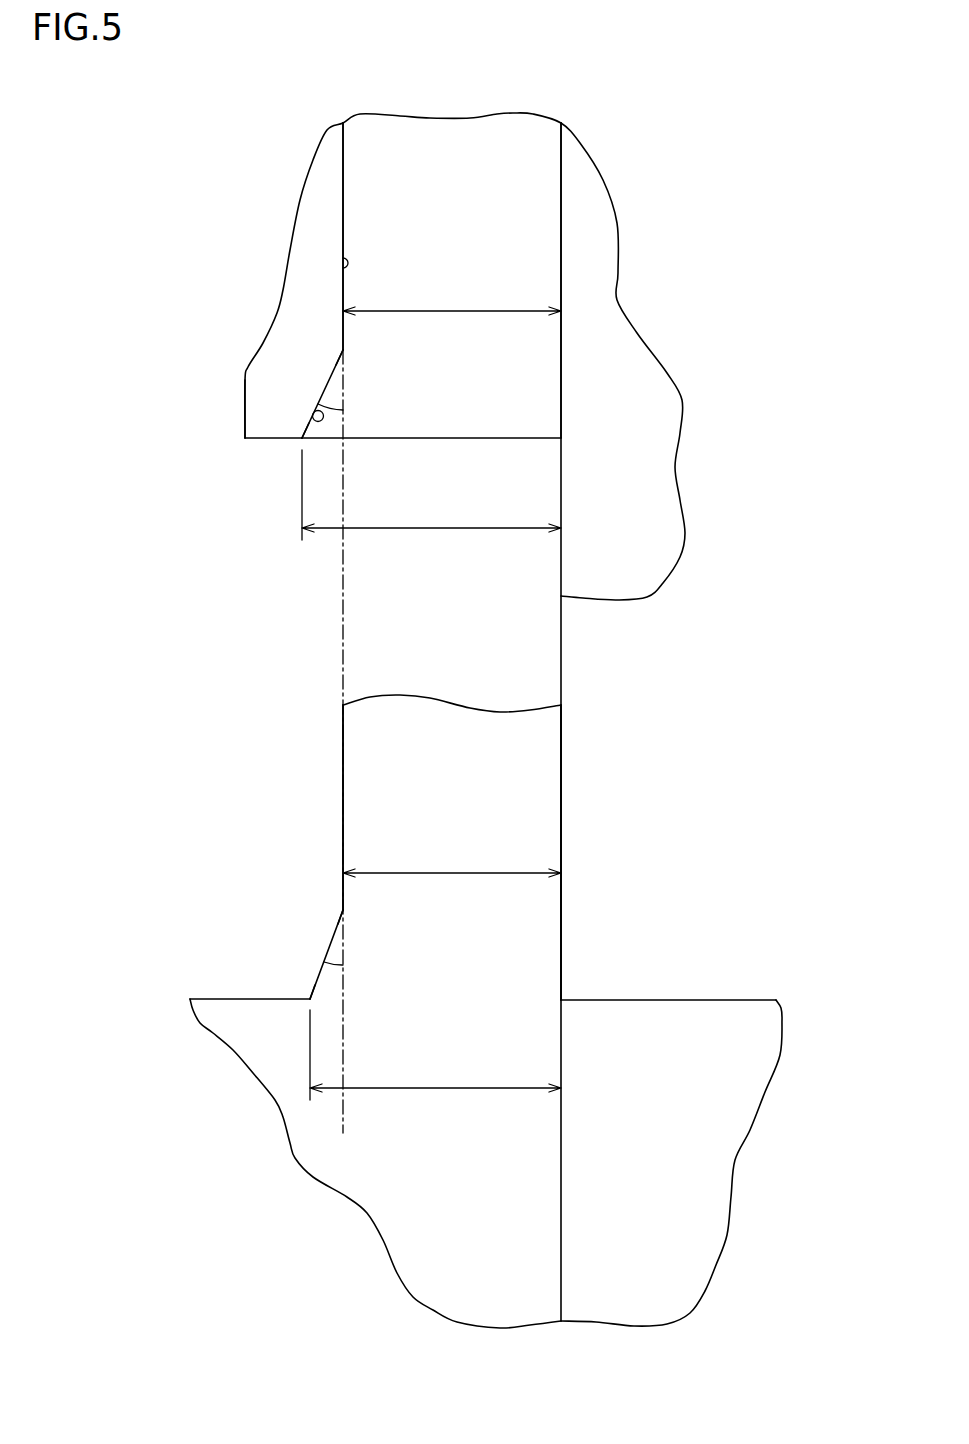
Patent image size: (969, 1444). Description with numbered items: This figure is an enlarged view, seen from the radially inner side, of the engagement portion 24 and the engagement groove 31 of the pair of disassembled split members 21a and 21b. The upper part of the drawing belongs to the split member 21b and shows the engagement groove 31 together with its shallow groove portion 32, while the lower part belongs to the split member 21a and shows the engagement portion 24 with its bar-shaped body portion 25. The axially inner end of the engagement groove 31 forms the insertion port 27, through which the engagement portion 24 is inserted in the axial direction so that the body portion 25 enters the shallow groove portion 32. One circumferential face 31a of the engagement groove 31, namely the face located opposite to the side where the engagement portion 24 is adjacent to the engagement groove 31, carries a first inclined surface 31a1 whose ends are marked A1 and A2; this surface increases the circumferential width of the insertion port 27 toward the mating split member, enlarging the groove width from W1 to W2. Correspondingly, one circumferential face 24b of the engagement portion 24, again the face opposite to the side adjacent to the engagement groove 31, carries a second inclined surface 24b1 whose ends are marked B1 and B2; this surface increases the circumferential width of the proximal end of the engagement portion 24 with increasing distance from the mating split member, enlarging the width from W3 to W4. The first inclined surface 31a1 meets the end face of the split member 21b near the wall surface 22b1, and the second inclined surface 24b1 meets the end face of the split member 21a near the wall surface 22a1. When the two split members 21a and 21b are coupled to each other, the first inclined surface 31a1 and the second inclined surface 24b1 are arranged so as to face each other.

The split member 21a is at (740, 977).
The split member 21b is at (267, 190).
The inner wall surface of first housing member 22a1 is at (203, 992).
The inner wall surface of second housing member 22b1 is at (265, 442).
The engagement portion 24 is at (497, 840).
The circumferential face of engagement portion 24b is at (343, 815).
The second inclined surface 24b1 is at (318, 970).
The body portion 25 is at (492, 937).
The insertion port 27 is at (482, 410).
The engagement groove 31 is at (528, 242).
The circumferential face of engagement groove 31a is at (343, 263).
The first inclined surface 31a1 is at (310, 415).
The shallow groove portion 32 is at (515, 188).
The end of first inclined surface A1 is at (343, 350).
The end of first inclined surface A2 is at (300, 437).
The end of second inclined surface B1 is at (343, 908).
The end of second inclined surface B2 is at (307, 1003).
The width of engagement groove W1 is at (452, 295).
The width of engagement groove at insertion port W2 is at (431, 495).
The width of engagement portion W3 is at (452, 857).
The width of proximal end of engagement portion W4 is at (435, 1055).